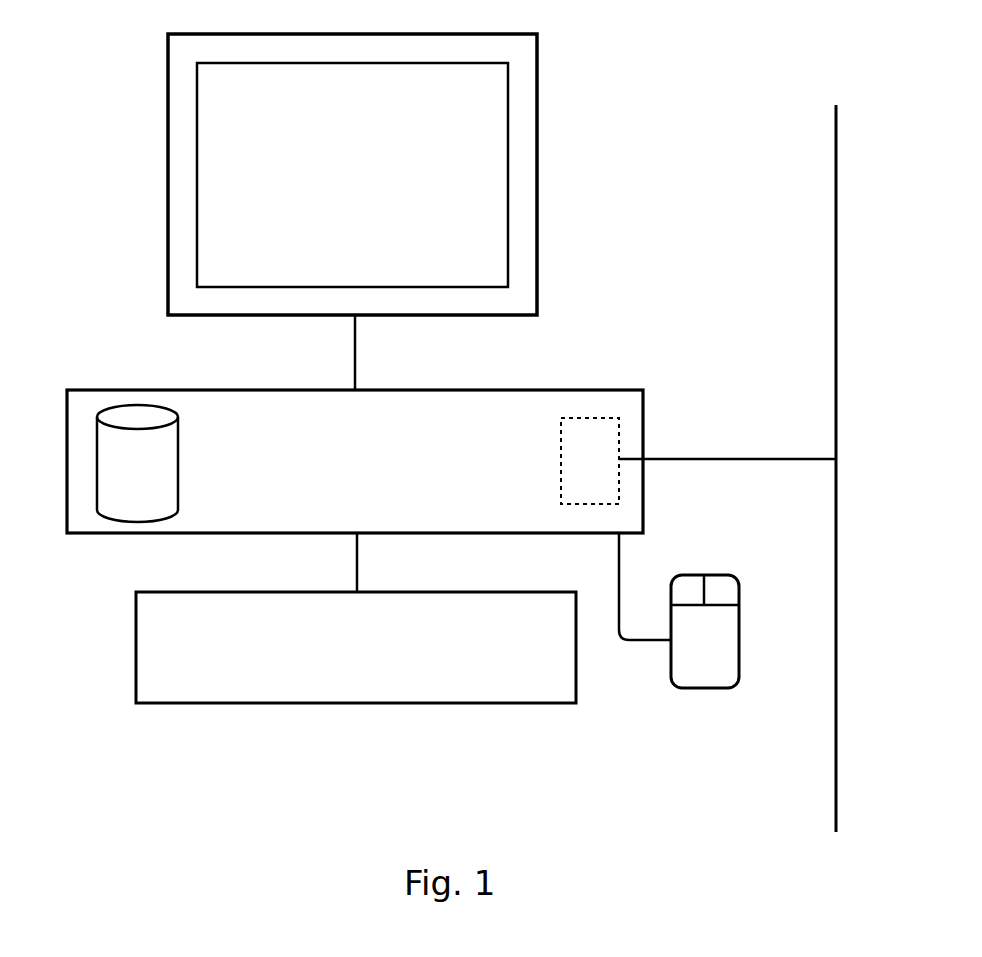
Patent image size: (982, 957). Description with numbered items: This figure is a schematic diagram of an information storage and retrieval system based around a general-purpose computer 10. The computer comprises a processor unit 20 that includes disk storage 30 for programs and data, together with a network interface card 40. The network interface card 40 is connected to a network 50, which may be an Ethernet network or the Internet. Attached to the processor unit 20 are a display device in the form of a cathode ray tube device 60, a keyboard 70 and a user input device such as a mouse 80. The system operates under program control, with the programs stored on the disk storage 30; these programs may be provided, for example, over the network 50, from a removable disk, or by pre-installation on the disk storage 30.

The general-purpose computer 10 is at (72, 124).
The processor unit 20 is at (558, 390).
The disk storage 30 is at (138, 404).
The network interface card 40 is at (620, 442).
The network 50 is at (838, 332).
The cathode ray tube device 60 is at (538, 156).
The keyboard 70 is at (520, 703).
The mouse 80 is at (698, 688).